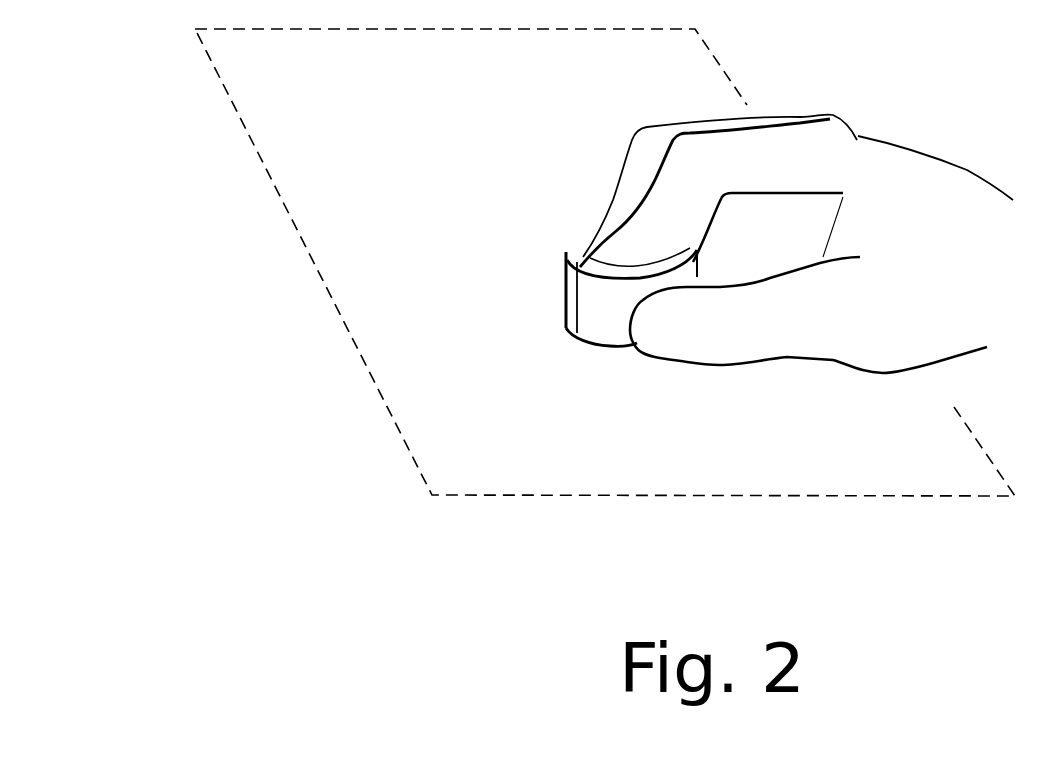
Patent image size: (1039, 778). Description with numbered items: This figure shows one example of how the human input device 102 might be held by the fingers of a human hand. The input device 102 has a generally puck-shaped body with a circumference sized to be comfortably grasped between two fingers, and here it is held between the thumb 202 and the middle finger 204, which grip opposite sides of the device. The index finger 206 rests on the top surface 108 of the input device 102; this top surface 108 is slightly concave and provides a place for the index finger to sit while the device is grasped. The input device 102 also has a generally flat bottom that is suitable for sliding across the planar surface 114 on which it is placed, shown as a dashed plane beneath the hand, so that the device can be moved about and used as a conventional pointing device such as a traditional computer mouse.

The planar surface 114 is at (500, 612).
The middle finger 204 is at (626, 189).
The top surface 108 is at (580, 261).
The human input device 102 is at (570, 340).
The index finger 206 is at (660, 232).
The thumb 202 is at (680, 323).